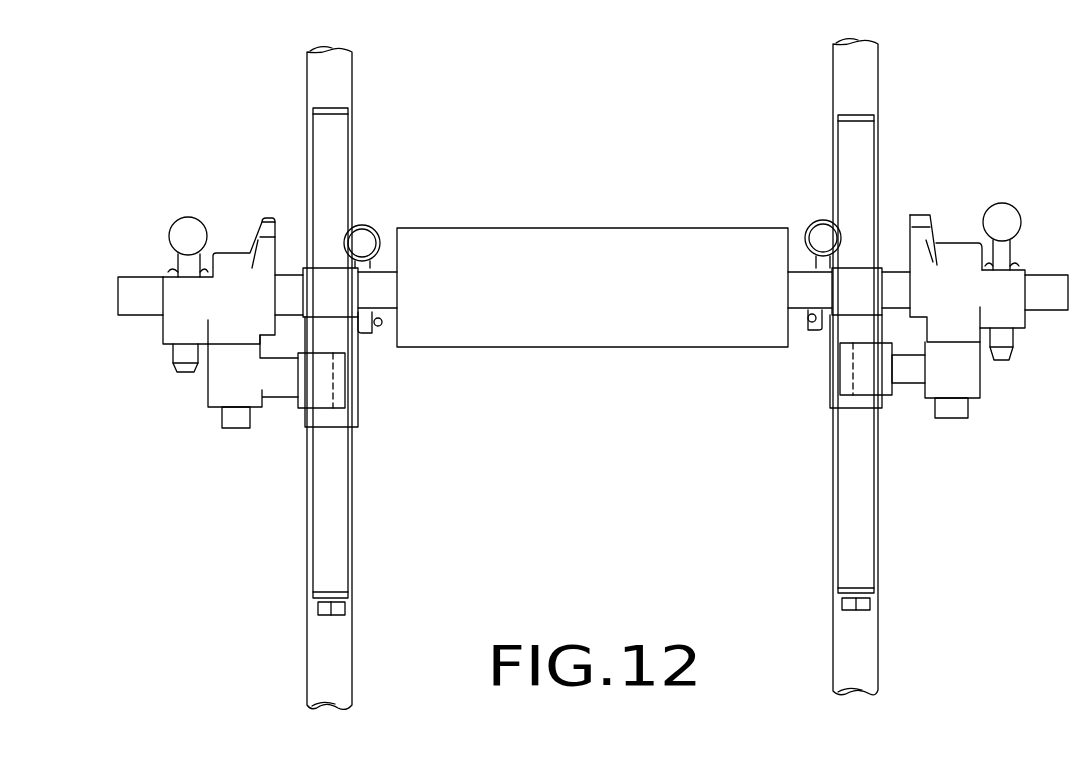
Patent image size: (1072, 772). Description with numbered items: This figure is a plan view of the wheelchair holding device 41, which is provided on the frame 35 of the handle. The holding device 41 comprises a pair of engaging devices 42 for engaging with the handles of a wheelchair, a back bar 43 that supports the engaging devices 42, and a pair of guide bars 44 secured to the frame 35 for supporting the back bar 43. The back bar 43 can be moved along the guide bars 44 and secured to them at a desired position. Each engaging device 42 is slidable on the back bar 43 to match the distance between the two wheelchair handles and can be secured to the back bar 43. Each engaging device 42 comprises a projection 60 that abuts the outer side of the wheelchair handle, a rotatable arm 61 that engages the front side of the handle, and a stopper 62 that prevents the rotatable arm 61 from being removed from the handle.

The frame 35 is at (345, 80).
The guide bars 44 is at (338, 172).
The wheelchair holding device 41 is at (595, 292).
The stopper 62 is at (187, 220).
The projection 60 is at (268, 225).
The back bar 43 is at (133, 285).
The engaging devices 42 is at (184, 391).
The rotatable arm 61 is at (310, 393).